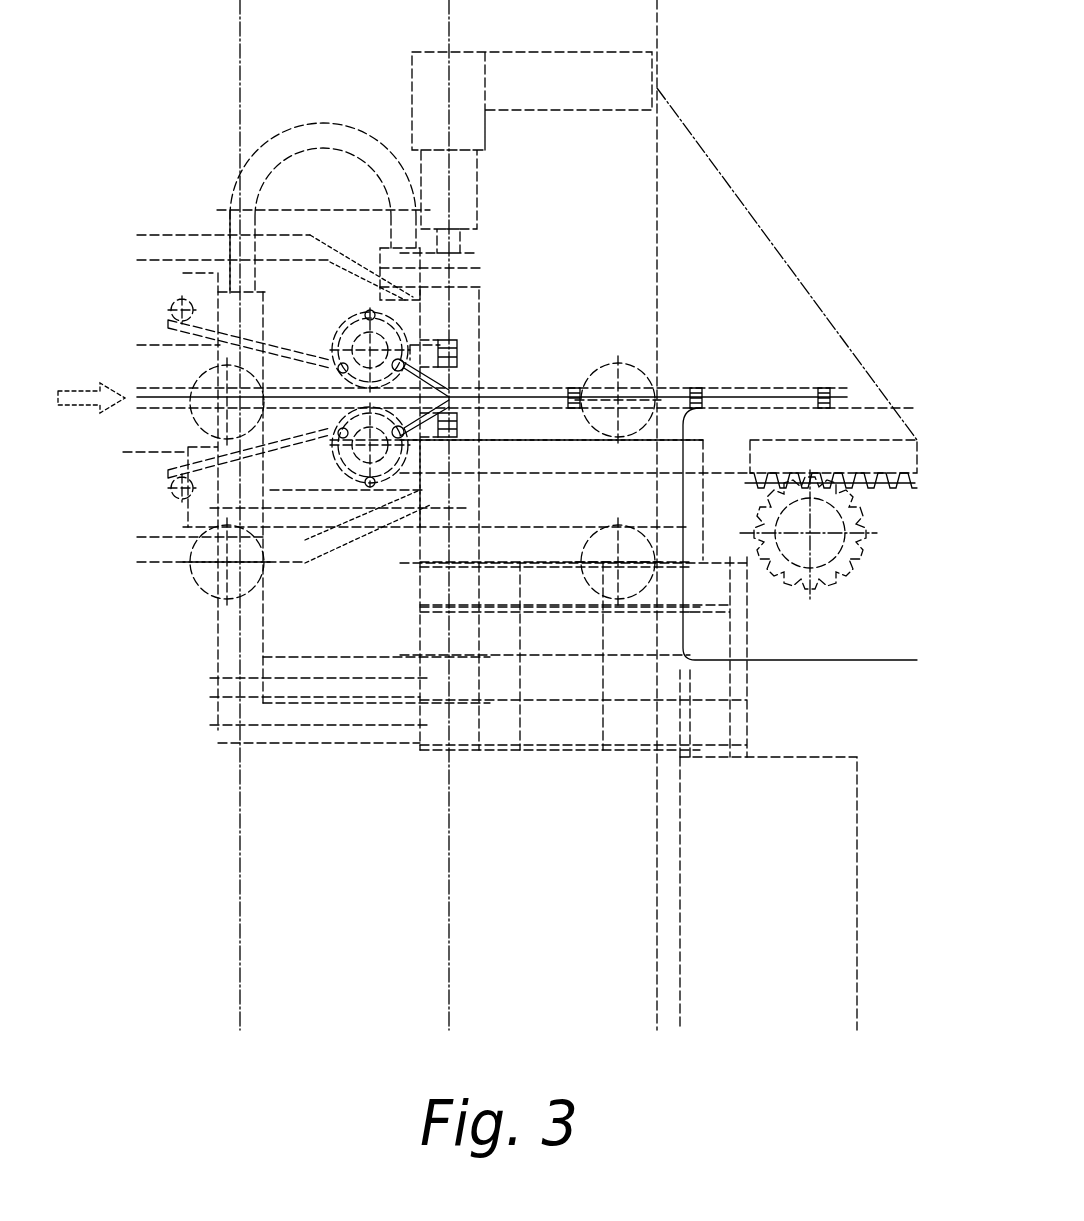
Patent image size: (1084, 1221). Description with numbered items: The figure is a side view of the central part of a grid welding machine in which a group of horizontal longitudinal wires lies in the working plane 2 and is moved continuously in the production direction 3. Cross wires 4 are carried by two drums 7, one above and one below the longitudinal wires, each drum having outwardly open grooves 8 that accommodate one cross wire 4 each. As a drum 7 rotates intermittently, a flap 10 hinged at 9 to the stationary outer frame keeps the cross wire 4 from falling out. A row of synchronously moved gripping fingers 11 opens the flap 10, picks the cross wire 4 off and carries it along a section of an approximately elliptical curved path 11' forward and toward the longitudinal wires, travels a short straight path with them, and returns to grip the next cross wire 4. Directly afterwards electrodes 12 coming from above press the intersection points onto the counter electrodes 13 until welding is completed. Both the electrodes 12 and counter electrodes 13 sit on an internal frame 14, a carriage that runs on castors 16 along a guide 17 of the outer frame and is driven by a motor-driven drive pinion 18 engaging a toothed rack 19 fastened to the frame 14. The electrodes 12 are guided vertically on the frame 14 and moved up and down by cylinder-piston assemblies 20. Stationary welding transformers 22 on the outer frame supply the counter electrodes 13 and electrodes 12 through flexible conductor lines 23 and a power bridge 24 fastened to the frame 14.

The working plane 2 is at (160, 390).
The production direction 3 is at (75, 385).
The cross wire 4 is at (700, 385).
The drum 7 is at (343, 324).
The groove 8 is at (343, 428).
The hinge 9 is at (180, 298).
The flap 10 is at (258, 335).
The gripping finger 11 is at (470, 387).
The elliptical curved path 11' is at (480, 358).
The electrode 12 is at (458, 368).
The counter electrode 13 is at (455, 410).
The internal frame 14 is at (770, 280).
The castor 16 is at (207, 572).
The guide 17 is at (580, 470).
The drive pinion 18 is at (835, 562).
The toothed rack 19 is at (883, 462).
The cylinder-piston assembly 20 is at (465, 200).
The welding transformer 22 is at (797, 890).
The flexible conductor line 23 is at (570, 727).
The power bridge 24 is at (265, 160).